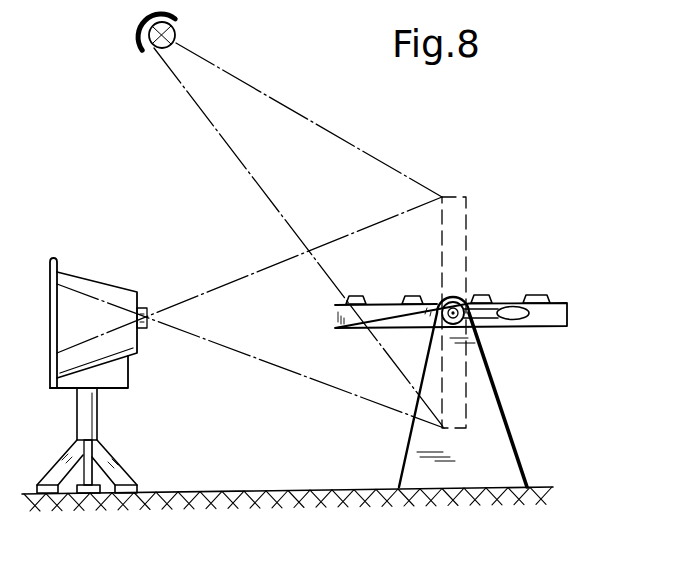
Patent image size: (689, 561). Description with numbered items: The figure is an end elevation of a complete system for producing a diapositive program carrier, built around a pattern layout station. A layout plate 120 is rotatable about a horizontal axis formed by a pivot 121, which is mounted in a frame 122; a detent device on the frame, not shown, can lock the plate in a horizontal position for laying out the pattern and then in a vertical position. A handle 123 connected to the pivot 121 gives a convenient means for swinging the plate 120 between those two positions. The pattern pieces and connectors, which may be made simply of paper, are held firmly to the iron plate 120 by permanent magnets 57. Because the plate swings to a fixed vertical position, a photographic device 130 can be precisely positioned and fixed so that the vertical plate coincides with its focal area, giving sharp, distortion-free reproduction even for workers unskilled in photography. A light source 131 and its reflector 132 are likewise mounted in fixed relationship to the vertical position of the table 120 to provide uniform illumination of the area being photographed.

The permanent magnets 57 is at (353, 296).
The layout plate 120 is at (565, 326).
The pivot 121 is at (452, 297).
The frame 122 is at (509, 447).
The handle 123 is at (518, 320).
The photographic device 130 is at (89, 268).
The light source 131 is at (177, 42).
The reflector 132 is at (140, 36).